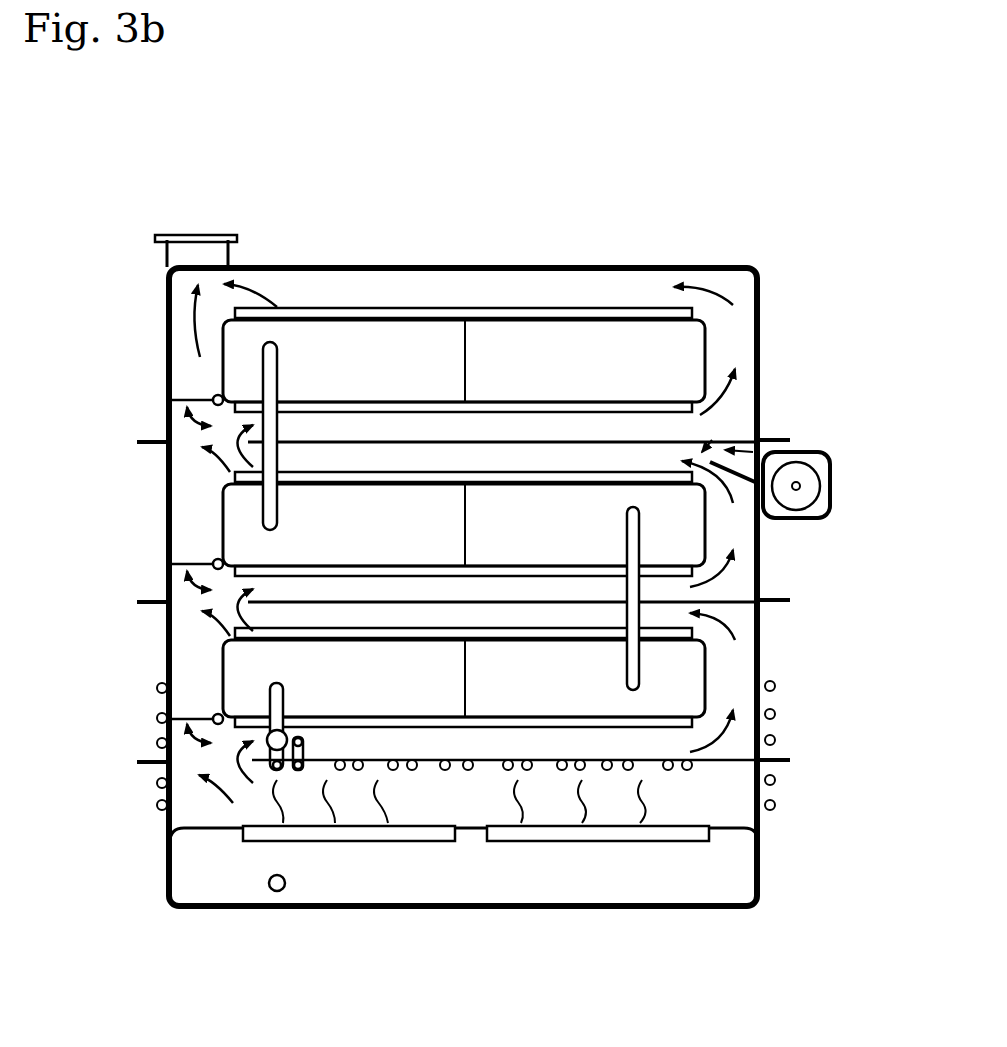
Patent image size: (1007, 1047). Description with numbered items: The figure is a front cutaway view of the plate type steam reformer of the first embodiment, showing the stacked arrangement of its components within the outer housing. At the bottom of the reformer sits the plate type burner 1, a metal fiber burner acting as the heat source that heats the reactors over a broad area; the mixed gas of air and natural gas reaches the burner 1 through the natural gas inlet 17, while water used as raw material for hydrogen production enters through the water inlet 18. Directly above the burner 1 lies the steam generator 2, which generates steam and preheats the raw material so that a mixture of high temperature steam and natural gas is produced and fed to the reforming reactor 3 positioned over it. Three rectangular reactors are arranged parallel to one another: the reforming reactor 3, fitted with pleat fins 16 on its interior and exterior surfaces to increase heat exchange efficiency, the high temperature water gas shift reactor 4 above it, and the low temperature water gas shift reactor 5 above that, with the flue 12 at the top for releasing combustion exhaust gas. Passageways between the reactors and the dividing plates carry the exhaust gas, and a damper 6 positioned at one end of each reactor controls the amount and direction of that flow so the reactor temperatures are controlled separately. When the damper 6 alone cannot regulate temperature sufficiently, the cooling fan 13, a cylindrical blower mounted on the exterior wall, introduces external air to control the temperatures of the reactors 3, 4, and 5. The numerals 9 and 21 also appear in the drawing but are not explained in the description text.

The burner 1 is at (190, 847).
The steam generator 2 is at (627, 758).
The reforming reactor 3 is at (240, 650).
The high temperature water gas shift reactor 4 is at (237, 505).
The low temperature water gas shift reactor 5 is at (237, 368).
The damper 6 is at (720, 445).
The drain outlet 9 is at (268, 883).
The flue 12 is at (165, 243).
The cooling fan 13 is at (815, 452).
The pleat fins 16 is at (575, 312).
The natural gas inlet 17 is at (672, 766).
The water inlet 18 is at (695, 755).
The temperature sensor 21 is at (270, 725).